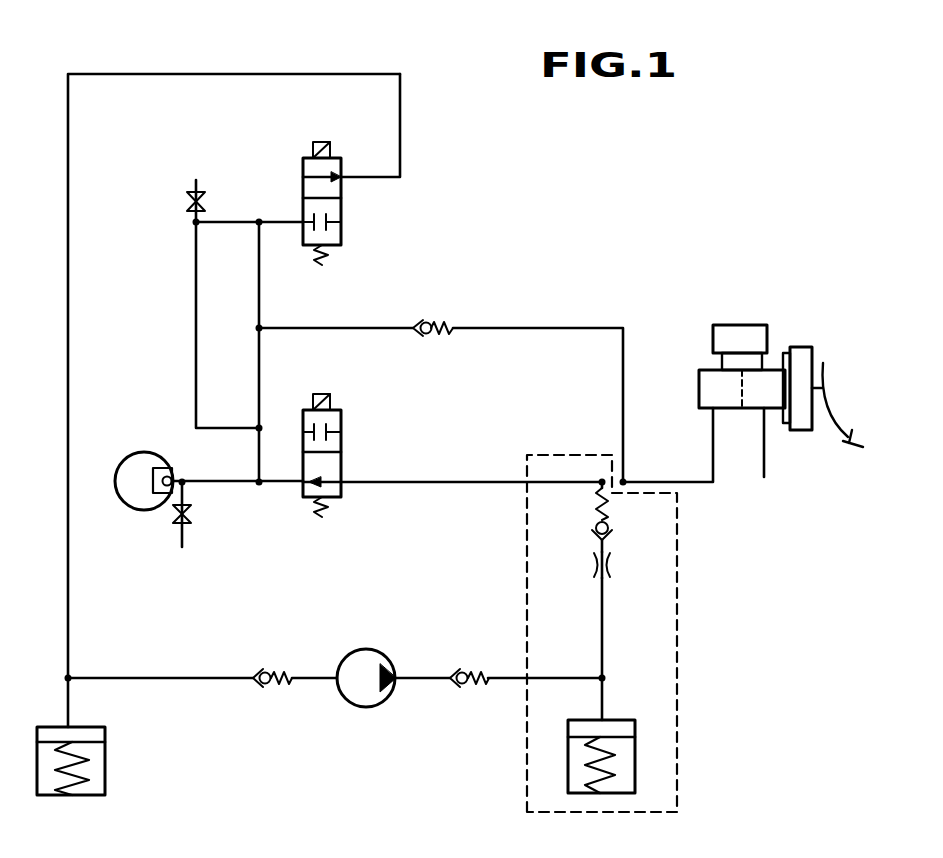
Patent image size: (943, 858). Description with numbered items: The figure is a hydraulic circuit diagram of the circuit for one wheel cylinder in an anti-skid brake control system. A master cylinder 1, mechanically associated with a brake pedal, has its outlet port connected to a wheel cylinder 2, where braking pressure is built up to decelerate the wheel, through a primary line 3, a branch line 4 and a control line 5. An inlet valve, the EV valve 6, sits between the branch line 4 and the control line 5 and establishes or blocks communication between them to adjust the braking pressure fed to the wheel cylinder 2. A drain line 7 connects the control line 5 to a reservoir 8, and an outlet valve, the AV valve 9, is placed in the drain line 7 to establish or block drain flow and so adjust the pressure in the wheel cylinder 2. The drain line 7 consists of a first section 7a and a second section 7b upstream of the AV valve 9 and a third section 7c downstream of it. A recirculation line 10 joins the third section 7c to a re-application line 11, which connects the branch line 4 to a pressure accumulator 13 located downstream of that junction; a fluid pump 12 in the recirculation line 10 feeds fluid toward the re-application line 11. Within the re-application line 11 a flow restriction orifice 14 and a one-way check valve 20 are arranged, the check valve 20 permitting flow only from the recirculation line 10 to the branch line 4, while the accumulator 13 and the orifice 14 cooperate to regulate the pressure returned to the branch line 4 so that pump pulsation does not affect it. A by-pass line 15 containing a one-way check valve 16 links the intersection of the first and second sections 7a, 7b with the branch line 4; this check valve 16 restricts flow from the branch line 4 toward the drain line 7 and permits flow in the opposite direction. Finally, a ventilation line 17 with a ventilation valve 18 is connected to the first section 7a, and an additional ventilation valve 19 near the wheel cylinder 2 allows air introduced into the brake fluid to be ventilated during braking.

The master cylinder 1 is at (770, 400).
The wheel cylinder 2 is at (128, 506).
The primary line 3 is at (689, 484).
The branch line 4 is at (458, 482).
The control line 5 is at (247, 484).
The inlet valve (EV valve) 6 is at (341, 440).
The drain line 7 is at (148, 74).
The first section of drain line 7a is at (259, 380).
The second section of drain line 7b is at (259, 297).
The third section of drain line 7c is at (400, 140).
The reservoir 8 is at (105, 748).
The outlet valve (AV valve) 9 is at (341, 205).
The recirculation line 10 is at (216, 681).
The re-application line 11 is at (602, 635).
The fluid pump 12 is at (378, 705).
The pressure accumulator 13 is at (623, 718).
The flow restriction orifice 14 is at (609, 565).
The by-pass line 15 is at (545, 328).
The one-way check valve 16 is at (436, 320).
The ventilation line 17 is at (196, 335).
The ventilation valve 18 is at (200, 193).
The additional ventilation valve 19 is at (190, 516).
The one-way check valve 20 is at (592, 518).